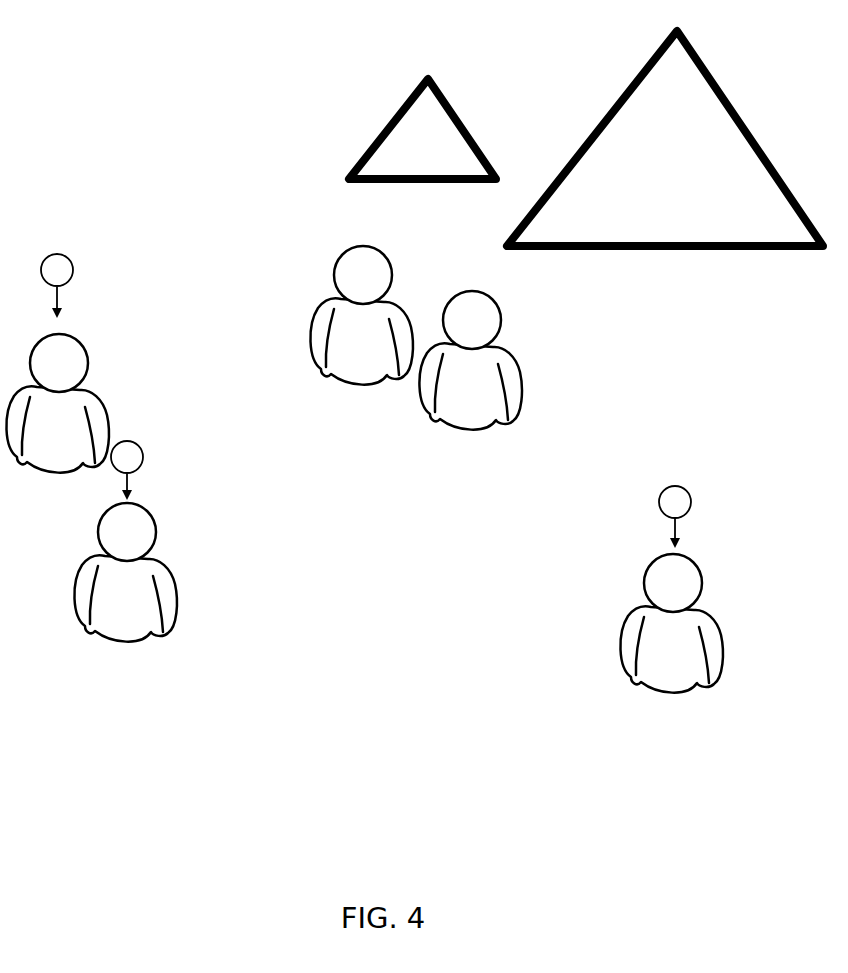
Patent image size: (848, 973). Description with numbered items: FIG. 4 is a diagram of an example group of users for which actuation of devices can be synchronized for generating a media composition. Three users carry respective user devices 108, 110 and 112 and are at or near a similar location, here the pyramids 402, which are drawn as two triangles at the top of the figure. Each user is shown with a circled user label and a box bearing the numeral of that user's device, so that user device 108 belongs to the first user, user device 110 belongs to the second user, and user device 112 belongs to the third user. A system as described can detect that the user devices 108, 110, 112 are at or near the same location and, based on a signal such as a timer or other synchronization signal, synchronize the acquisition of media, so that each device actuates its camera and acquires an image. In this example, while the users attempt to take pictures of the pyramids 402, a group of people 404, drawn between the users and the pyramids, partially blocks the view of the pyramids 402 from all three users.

The user device 108 is at (100, 363).
The user device 110 is at (168, 541).
The user device 112 is at (711, 589).
The pyramids 402 is at (730, 99).
The group of people 404 is at (420, 453).